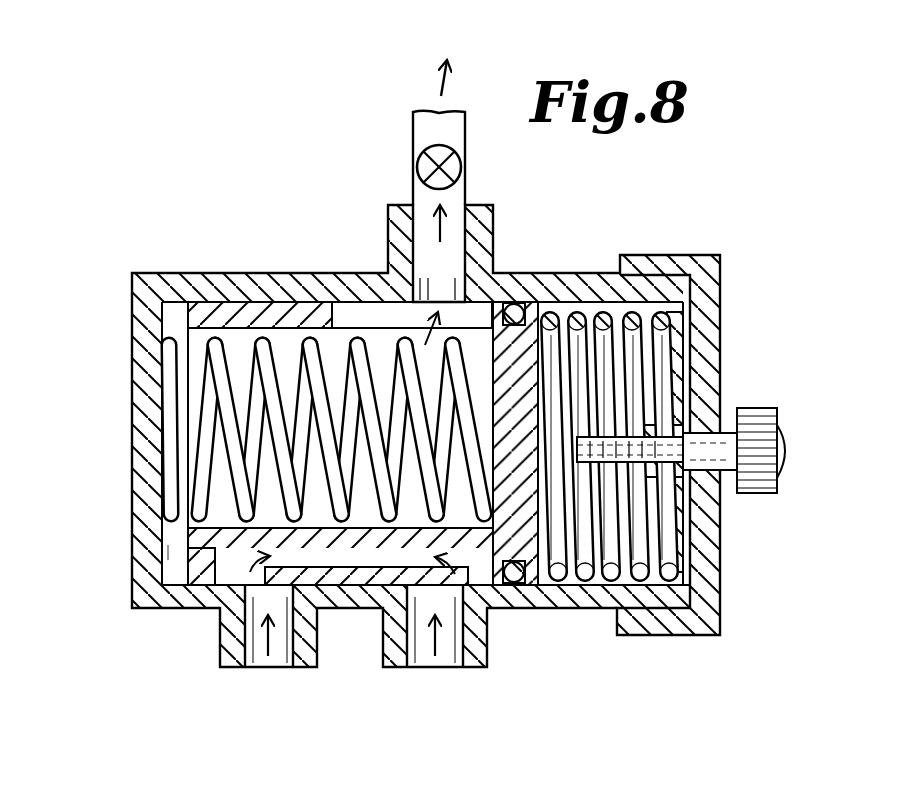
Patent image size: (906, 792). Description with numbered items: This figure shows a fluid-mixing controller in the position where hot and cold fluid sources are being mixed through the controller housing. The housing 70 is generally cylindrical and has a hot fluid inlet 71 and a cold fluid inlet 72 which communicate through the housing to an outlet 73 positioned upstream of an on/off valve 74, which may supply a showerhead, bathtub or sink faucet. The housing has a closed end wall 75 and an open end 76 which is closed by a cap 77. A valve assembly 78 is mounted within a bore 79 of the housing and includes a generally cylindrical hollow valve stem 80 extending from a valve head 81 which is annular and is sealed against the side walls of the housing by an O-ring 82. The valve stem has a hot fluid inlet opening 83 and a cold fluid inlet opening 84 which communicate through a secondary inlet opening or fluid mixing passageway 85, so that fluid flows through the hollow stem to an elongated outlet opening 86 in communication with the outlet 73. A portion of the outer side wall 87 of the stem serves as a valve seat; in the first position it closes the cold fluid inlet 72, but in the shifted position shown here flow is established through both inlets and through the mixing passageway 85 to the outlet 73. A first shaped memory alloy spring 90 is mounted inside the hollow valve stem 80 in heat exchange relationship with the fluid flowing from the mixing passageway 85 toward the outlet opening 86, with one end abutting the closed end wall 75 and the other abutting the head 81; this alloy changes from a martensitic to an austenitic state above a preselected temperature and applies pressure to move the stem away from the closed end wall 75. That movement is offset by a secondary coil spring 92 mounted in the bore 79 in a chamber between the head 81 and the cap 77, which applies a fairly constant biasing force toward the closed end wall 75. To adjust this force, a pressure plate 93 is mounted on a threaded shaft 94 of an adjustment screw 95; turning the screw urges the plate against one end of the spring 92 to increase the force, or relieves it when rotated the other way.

The housing 70 is at (163, 252).
The hot fluid inlet 71 is at (468, 670).
The cold fluid inlet 72 is at (240, 672).
The outlet 73 is at (415, 212).
The on/off valve 74 is at (420, 151).
The closed end wall 75 is at (135, 377).
The open end 76 is at (687, 577).
The cap 77 is at (718, 630).
The valve assembly 78 is at (168, 552).
The bore 79 is at (165, 315).
The valve stem 80 is at (216, 302).
The valve head 81 is at (545, 592).
The O-ring 82 is at (512, 312).
The hot fluid inlet opening 83 is at (480, 590).
The cold fluid inlet opening 84 is at (236, 566).
The fluid mixing passageway 85 is at (358, 515).
The outlet opening 86 is at (350, 306).
The outer side wall 87 is at (398, 595).
The shaped memory alloy spring 90 is at (200, 433).
The secondary coil spring 92 is at (650, 535).
The pressure plate 93 is at (680, 326).
The threaded shaft 94 is at (665, 440).
The adjustment screw 95 is at (766, 488).